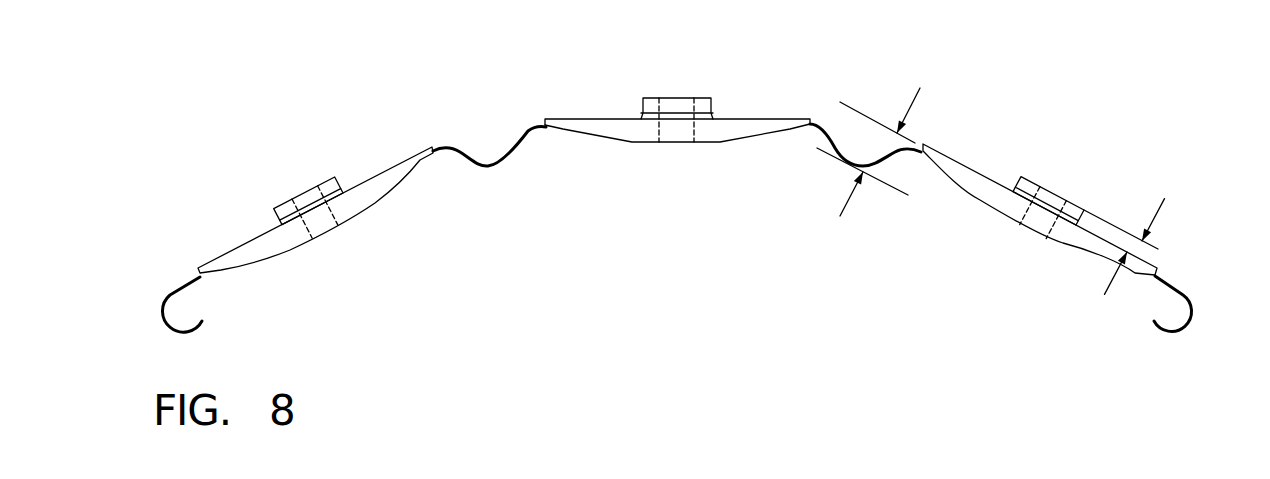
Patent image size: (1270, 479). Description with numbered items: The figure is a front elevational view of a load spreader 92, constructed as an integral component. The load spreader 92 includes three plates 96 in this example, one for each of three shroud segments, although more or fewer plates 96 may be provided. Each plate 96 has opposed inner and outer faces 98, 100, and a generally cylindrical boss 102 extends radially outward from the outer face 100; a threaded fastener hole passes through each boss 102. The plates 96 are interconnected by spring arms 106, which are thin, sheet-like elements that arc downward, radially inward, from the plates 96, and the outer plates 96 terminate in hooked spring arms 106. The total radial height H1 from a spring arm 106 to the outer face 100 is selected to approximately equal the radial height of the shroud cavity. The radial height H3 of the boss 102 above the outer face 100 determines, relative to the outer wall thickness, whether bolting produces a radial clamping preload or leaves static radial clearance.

The load spreader 92 is at (657, 31).
The plate 96 is at (411, 158).
The inner face 98 is at (747, 140).
The outer face 100 is at (762, 118).
The boss 102 is at (327, 177).
The spring arm 106 is at (170, 295).
The total radial height H1 is at (911, 103).
The radial height of boss H3 is at (1156, 210).